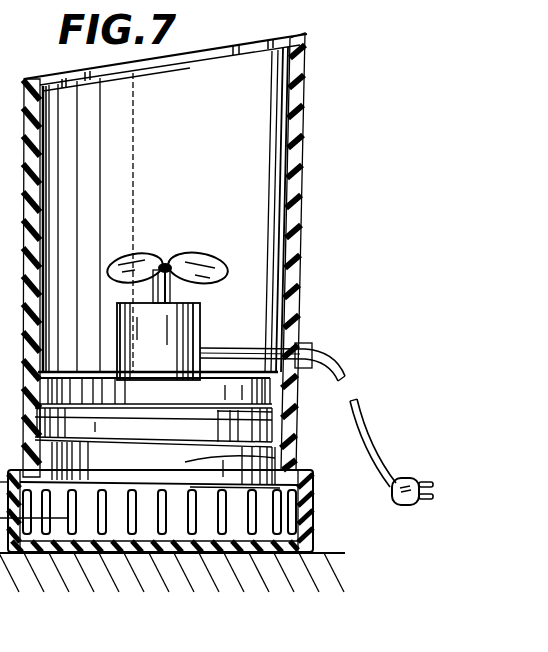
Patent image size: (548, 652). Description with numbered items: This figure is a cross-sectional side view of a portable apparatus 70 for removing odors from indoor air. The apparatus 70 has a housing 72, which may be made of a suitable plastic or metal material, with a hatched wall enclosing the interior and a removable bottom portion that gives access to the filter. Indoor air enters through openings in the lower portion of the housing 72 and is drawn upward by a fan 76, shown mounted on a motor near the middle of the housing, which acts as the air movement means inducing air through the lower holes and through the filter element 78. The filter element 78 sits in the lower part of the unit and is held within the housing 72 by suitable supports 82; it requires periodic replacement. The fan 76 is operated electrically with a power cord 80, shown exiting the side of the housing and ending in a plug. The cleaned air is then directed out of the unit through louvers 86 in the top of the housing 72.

The portable apparatus 70 is at (325, 101).
The housing 72 is at (303, 268).
The fan 76 is at (201, 317).
The filter element 78 is at (153, 427).
The power cord 80 is at (316, 424).
The supports 82 is at (73, 455).
The louvers 86 is at (236, 53).